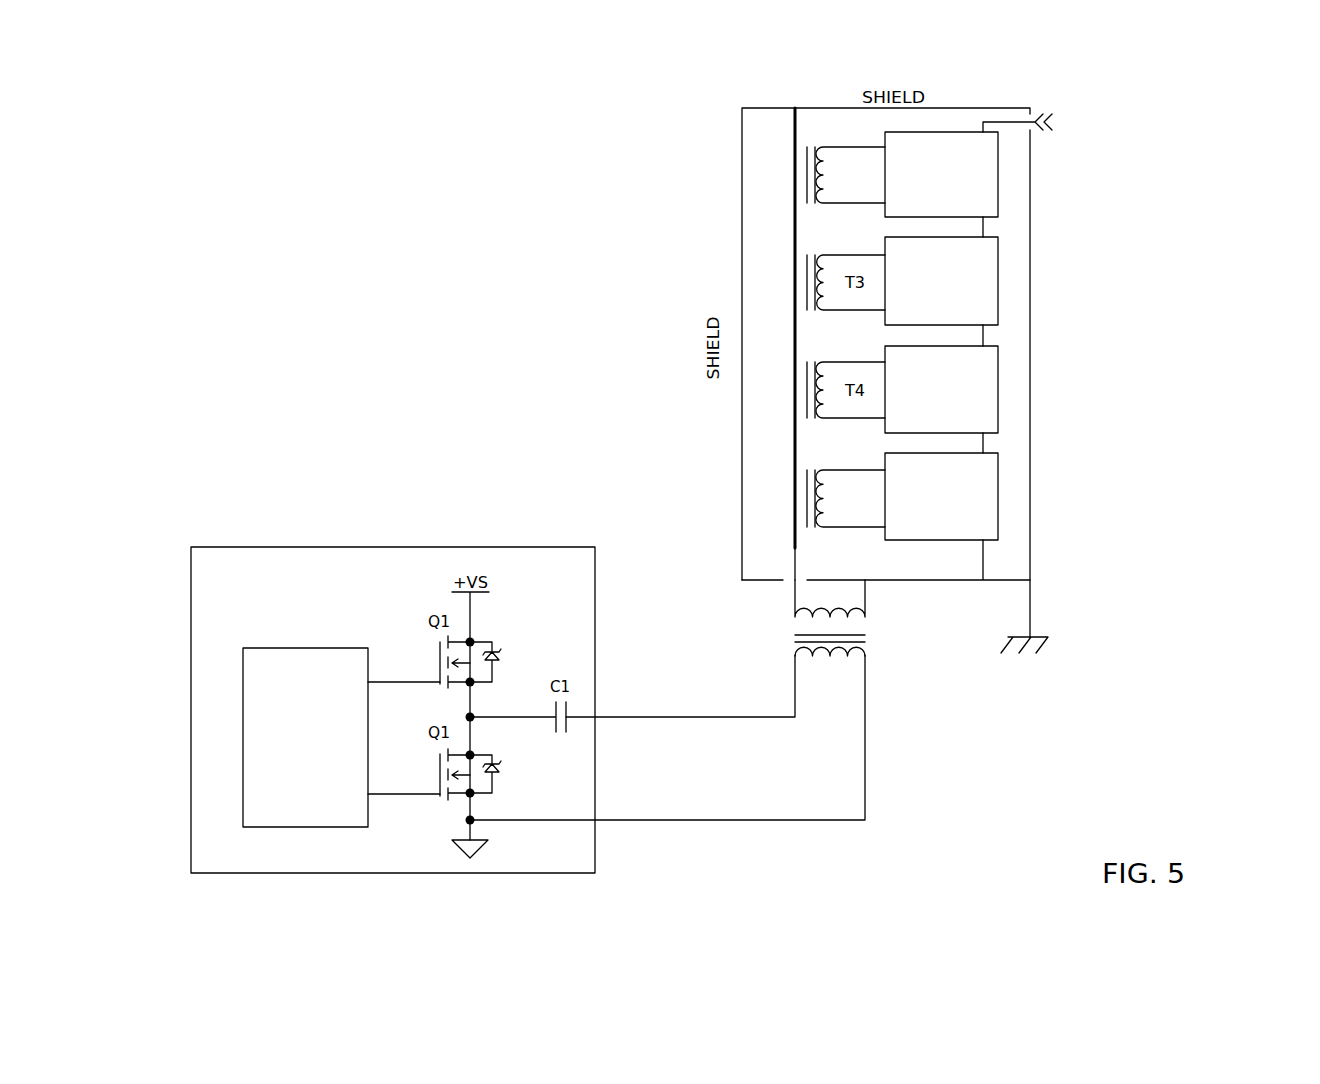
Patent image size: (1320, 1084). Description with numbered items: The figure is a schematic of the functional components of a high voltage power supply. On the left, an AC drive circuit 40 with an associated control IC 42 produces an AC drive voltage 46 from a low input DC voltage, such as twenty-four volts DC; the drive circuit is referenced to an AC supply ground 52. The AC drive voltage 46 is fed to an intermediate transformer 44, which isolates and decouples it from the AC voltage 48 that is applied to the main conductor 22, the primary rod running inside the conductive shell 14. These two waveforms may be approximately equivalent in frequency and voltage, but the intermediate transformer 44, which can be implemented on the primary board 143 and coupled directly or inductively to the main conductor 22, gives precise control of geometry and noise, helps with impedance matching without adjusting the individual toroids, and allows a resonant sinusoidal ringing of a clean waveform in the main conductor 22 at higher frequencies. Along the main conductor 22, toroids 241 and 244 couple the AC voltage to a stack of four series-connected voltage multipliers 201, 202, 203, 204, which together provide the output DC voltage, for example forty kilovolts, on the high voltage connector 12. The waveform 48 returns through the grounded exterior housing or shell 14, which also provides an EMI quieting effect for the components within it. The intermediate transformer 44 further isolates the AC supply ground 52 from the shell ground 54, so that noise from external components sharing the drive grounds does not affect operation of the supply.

The connector 12 is at (1190, 137).
The shell 14 is at (1031, 252).
The board 143 is at (1031, 580).
The multiplier 201 is at (995, 200).
The multiplier 202 is at (998, 305).
The multiplier 203 is at (1000, 383).
The multiplier 204 is at (998, 487).
The main conductor 22 is at (795, 130).
The toroid 241 is at (820, 158).
The toroid 244 is at (823, 490).
The AC drive circuit 40 is at (227, 547).
The control IC 42 is at (243, 737).
The intermediate transformer 44 is at (960, 718).
The AC drive voltage 46 is at (804, 826).
The AC voltage 48 is at (775, 600).
The AC supply ground 52 is at (486, 855).
The shell ground 54 is at (1058, 647).